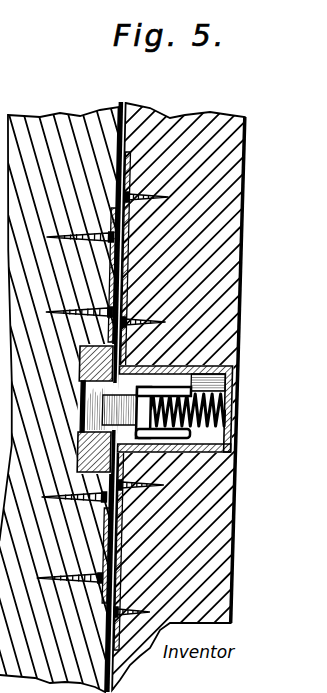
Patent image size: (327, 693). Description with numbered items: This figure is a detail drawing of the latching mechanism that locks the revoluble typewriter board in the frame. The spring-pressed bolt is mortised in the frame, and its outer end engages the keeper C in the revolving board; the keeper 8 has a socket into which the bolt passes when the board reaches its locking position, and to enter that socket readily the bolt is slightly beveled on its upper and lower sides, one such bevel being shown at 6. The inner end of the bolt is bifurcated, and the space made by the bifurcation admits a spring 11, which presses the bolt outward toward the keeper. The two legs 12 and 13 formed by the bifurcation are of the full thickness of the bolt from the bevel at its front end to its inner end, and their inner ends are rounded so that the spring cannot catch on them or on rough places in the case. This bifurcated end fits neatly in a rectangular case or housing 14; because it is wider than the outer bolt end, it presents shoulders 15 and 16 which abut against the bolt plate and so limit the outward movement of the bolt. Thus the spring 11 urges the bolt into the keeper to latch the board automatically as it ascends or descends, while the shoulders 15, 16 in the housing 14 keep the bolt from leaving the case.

The keeper C is at (80, 362).
The bevel on upper side of bolt 6 is at (80, 440).
The keeper 8 is at (83, 423).
The spring 11 is at (204, 394).
The bolt leg 12 is at (164, 367).
The bolt leg 13 is at (176, 438).
The case or housing 14 is at (179, 396).
The shoulder 15 is at (152, 447).
The shoulder 16 is at (134, 369).